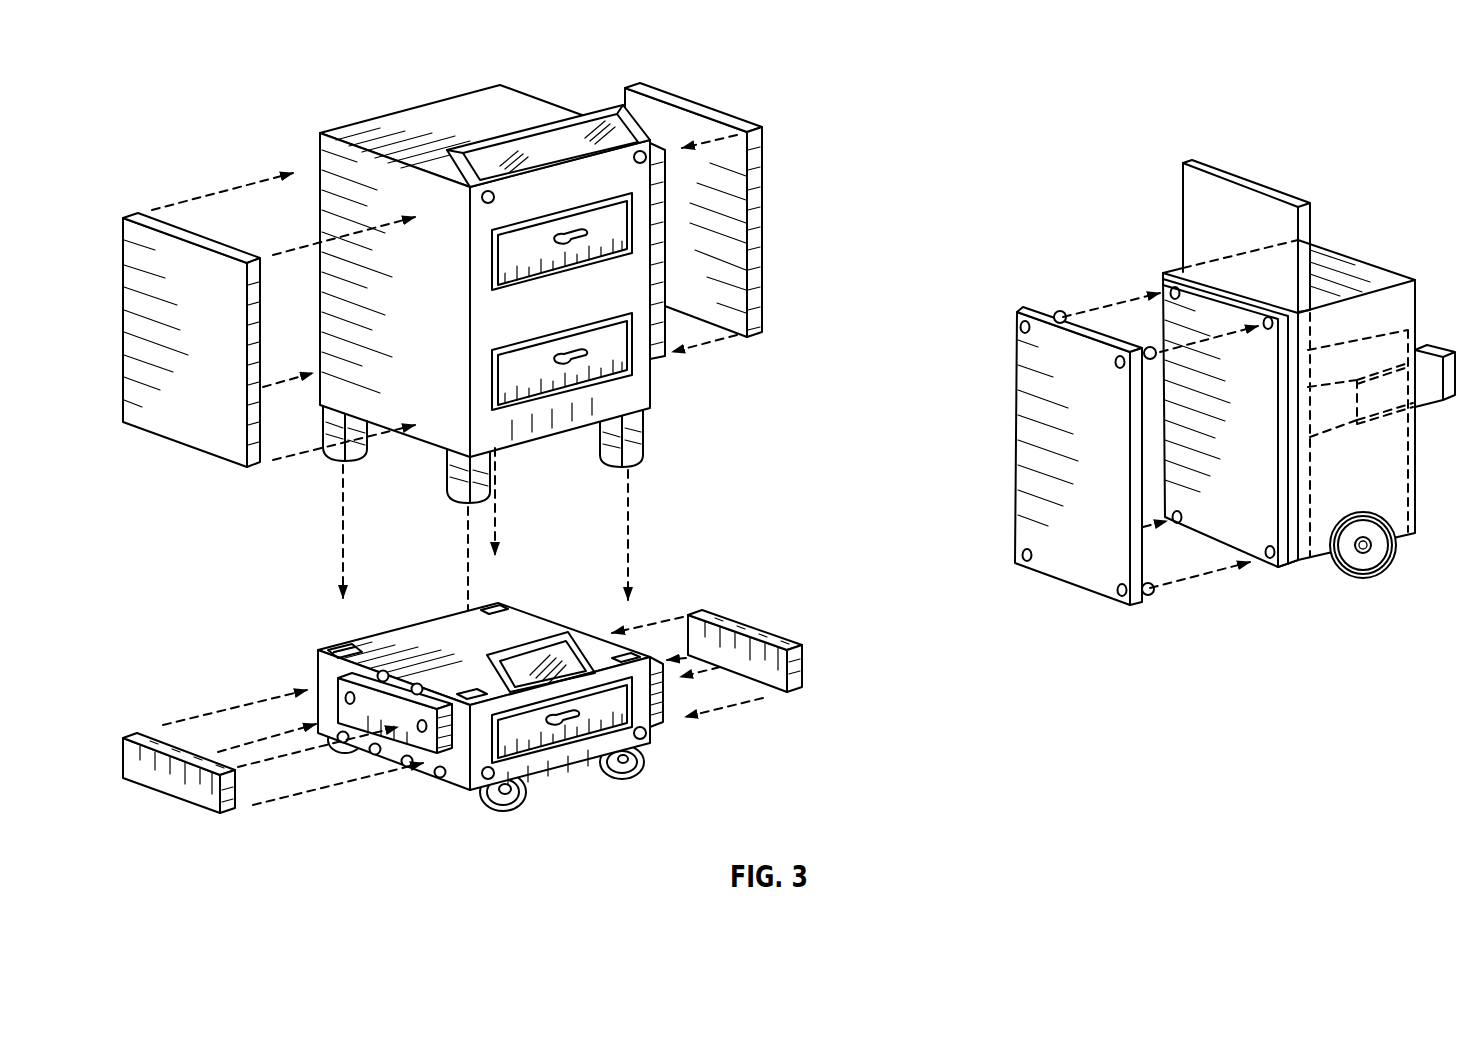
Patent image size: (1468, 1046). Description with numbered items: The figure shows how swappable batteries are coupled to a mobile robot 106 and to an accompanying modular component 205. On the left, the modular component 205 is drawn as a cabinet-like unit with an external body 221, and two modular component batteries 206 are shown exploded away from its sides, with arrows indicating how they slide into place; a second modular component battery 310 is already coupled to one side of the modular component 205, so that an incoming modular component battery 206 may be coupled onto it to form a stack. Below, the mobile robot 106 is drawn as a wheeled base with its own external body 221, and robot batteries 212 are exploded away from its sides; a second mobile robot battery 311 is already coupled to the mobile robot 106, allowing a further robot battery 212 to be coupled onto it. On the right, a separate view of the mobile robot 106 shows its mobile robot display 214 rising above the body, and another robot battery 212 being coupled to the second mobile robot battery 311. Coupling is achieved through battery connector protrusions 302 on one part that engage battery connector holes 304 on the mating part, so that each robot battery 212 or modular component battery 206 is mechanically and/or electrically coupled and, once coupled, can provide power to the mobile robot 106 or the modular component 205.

The mobile robot 106 is at (570, 792).
The modular component 205 is at (513, 65).
The modular component battery 206 is at (703, 112).
The robot battery 212 is at (172, 783).
The mobile robot display 214 is at (1177, 195).
The external body 221 is at (338, 163).
The battery connector protrusion 302 is at (1150, 348).
The battery connector hole 304 is at (422, 732).
The second modular component battery 310 is at (655, 353).
The second mobile robot battery 311 is at (332, 688).